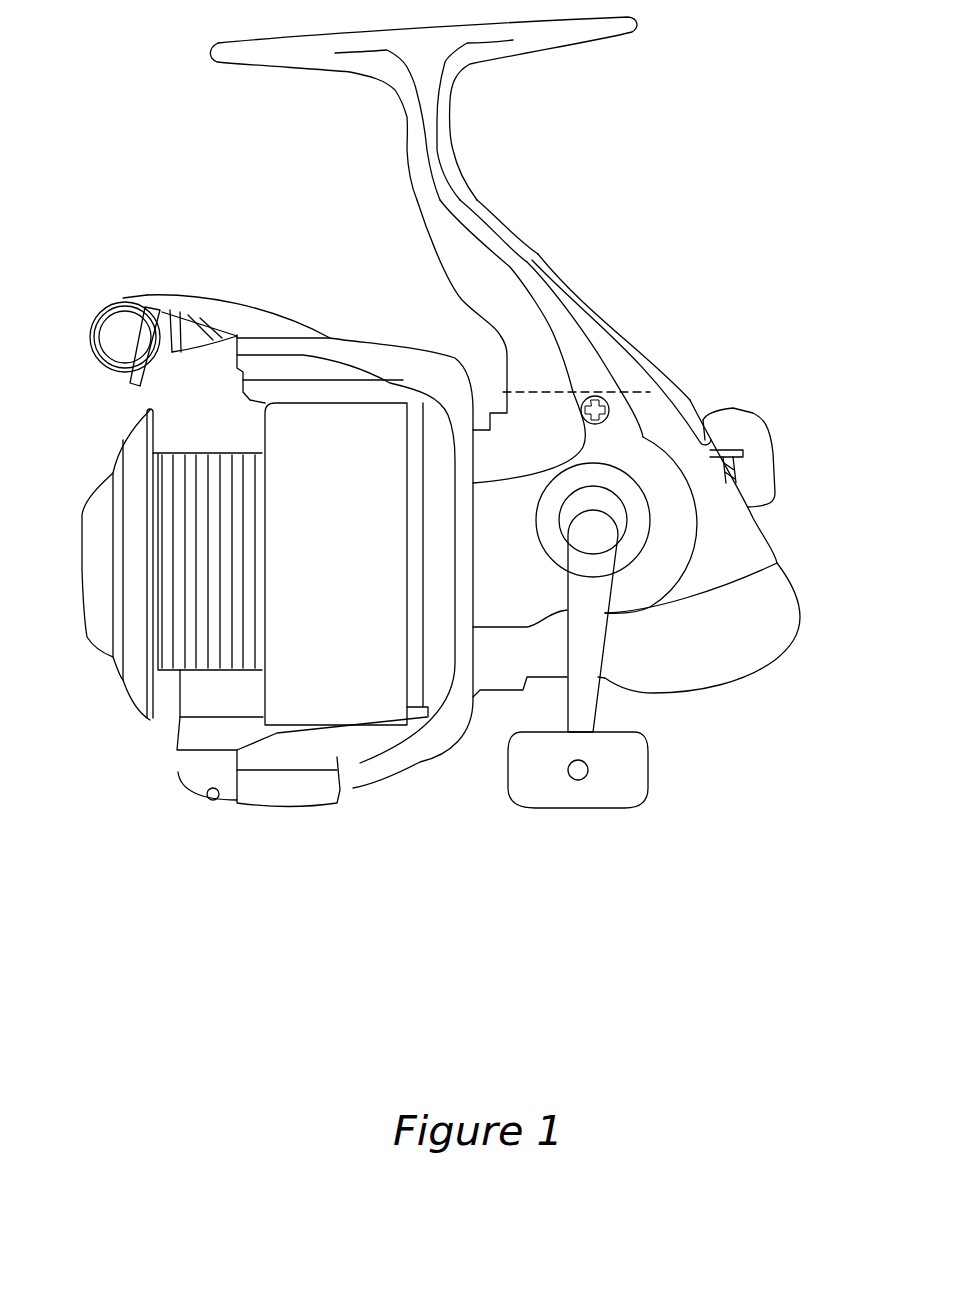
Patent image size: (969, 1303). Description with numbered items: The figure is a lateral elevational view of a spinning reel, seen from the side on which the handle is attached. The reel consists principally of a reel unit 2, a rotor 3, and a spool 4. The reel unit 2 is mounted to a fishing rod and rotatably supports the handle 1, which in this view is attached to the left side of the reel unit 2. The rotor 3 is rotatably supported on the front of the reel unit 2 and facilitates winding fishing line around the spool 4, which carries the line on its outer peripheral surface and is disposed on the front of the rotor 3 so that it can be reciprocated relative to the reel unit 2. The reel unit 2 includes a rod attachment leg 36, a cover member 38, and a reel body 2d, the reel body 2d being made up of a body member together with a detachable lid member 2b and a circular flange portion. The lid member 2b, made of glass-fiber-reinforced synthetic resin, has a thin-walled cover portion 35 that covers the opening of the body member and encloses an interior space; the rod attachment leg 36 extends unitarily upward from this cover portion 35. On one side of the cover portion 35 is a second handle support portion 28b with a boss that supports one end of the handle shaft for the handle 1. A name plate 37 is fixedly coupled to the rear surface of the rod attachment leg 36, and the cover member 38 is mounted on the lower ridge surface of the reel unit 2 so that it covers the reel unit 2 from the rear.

The handle 1 is at (590, 697).
The reel unit 2 is at (535, 208).
The lid member 2b is at (641, 428).
The reel body 2d is at (757, 556).
The rotor 3 is at (443, 730).
The spool 4 is at (200, 647).
The second handle support portion 28b is at (620, 487).
The cover portion 35 is at (665, 493).
The rod attachment leg 36 is at (513, 272).
The name plate 37 is at (610, 322).
The cover member 38 is at (742, 630).